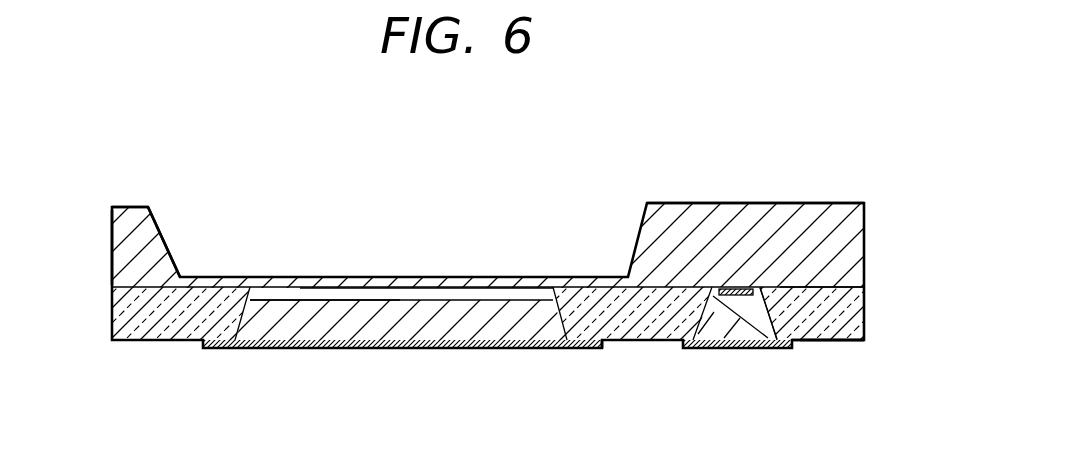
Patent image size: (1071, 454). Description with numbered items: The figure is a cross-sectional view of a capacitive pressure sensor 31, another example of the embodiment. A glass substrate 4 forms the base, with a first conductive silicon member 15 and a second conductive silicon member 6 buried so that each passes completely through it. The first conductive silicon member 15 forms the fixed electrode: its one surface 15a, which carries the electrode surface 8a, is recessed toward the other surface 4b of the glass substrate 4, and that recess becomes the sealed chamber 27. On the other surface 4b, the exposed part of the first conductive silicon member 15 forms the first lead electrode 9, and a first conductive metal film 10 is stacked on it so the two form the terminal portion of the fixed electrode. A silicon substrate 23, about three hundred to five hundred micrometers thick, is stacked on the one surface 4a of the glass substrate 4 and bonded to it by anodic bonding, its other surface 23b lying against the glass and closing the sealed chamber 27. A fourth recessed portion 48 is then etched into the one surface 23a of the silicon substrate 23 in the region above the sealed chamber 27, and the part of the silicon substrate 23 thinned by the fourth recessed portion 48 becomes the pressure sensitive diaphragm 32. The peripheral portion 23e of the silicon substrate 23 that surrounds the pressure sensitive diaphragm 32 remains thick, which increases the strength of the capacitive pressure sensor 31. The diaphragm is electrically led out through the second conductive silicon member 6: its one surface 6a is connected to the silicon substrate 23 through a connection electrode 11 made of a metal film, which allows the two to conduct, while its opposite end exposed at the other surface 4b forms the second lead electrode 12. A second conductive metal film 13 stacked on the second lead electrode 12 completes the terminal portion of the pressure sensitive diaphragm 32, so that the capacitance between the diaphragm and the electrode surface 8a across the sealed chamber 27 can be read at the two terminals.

The capacitive pressure sensor 31 is at (845, 153).
The silicon substrate 23 is at (852, 242).
The one surface of silicon substrate 23a is at (137, 206).
The bottom surface of frame body 23b is at (832, 341).
The peripheral portion 23e is at (128, 258).
The fourth recessed portion 48 is at (160, 228).
The pressure sensitive diaphragm 32 is at (337, 286).
The glass substrate 4 is at (870, 310).
The one surface of glass substrate 4a is at (848, 283).
The other surface of glass substrate 4b is at (850, 341).
The first conductive silicon member 15 is at (295, 335).
The one surface of first conductive silicon member 15a is at (290, 299).
The electrode surface 8a is at (400, 299).
The sealed chamber 27 is at (468, 287).
The first lead electrode 9 is at (412, 349).
The first conductive metal film 10 is at (603, 349).
The second conductive metal film 13 is at (677, 348).
The second conductive silicon member 6 is at (722, 343).
The one surface of second conductive silicon member 6a is at (764, 288).
The connection electrode 11 is at (748, 289).
The second lead electrode 12 is at (751, 343).